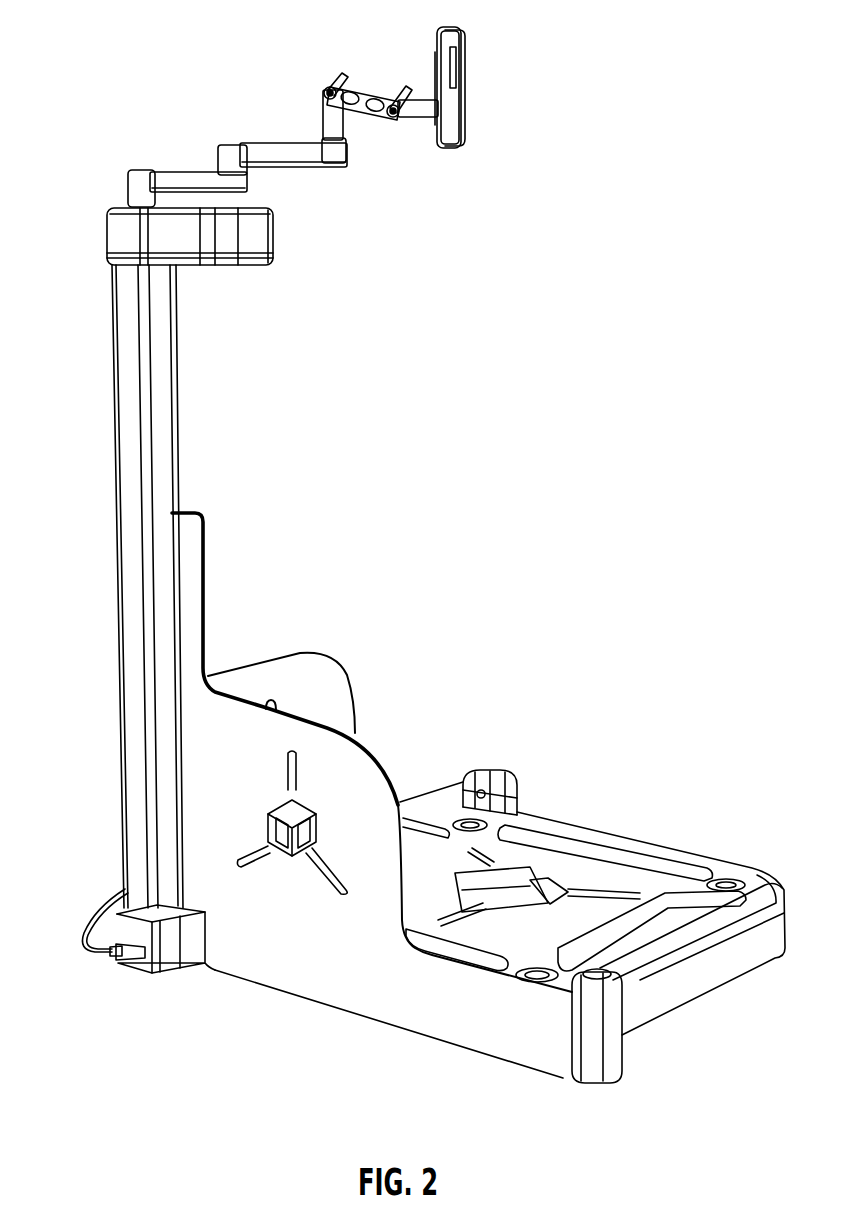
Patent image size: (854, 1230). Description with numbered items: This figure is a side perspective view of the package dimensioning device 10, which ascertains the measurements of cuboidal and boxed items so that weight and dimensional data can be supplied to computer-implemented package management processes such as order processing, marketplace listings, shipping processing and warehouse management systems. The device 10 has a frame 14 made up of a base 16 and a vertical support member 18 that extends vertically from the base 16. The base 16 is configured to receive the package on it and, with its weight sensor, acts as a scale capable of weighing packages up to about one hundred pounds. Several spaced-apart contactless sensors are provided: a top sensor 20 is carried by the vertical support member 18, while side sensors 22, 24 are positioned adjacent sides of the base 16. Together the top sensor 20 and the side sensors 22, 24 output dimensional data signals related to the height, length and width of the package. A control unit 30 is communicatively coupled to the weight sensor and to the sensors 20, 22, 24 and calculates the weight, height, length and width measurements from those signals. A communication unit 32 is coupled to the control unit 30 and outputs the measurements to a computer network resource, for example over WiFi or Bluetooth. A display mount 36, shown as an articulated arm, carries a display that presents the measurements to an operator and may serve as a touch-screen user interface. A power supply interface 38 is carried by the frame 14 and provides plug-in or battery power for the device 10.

The package dimensioning device 10 is at (666, 81).
The frame 14 is at (352, 678).
The base 16 is at (743, 953).
The vertical support member 18 is at (128, 398).
The top sensor 20 is at (258, 257).
The side sensor 22 is at (593, 987).
The side sensor 24 is at (517, 790).
The control unit 30 is at (463, 143).
The communication unit 32 is at (453, 67).
The display mount 36 is at (332, 123).
The power supply interface 38 is at (115, 953).